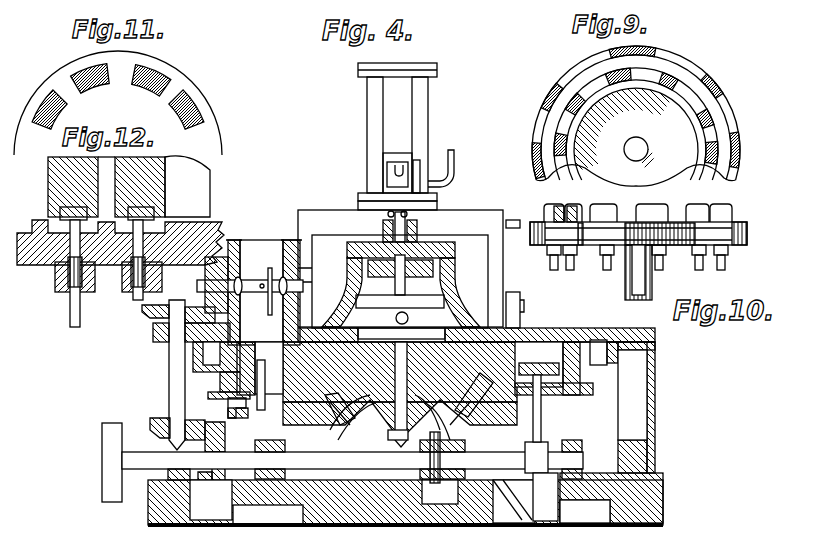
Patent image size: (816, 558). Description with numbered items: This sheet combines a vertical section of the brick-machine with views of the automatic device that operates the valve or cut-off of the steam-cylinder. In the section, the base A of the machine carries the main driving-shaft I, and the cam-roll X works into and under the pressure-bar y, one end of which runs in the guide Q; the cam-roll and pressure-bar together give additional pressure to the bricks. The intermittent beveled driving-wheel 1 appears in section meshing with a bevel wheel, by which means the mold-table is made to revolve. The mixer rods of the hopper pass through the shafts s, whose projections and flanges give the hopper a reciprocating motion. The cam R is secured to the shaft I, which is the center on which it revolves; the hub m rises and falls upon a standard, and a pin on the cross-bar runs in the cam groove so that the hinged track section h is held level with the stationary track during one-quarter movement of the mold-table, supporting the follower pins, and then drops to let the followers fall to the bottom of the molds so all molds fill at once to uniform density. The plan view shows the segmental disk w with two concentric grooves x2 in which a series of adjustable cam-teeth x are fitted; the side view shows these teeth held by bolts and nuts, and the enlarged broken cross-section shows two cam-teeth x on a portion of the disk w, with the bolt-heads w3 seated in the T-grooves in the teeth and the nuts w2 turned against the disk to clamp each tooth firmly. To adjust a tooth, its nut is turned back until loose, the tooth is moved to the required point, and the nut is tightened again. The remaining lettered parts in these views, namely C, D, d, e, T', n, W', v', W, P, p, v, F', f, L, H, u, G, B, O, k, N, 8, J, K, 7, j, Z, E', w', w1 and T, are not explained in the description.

In FIG. 4, the standard column C is at (406, 136).
In FIG. 4, the head frame D is at (400, 269).
In FIG. 4, the guide posts d is at (398, 229).
In FIG. 4, the adjusting screw e is at (401, 224).
In FIG. 4, the bell-shaped die holder T' is at (401, 284).
In FIG. 4, the plunger n is at (400, 275).
In FIG. 4, the upper die plate W' is at (400, 302).
In FIG. 4, the roller v' is at (408, 318).
In FIG. 4, the lower die plate W is at (401, 334).
In FIG. 4, the side plate P is at (476, 299).
In FIG. 4, the plate flanges p is at (305, 297).
In FIG. 4, the stop block v is at (515, 310).
In FIG. 4, the feed housing F' is at (264, 292).
In FIG. 4, the feed shaft f is at (250, 289).
In FIG. 4, the shaft s is at (238, 285).
In FIG. 4, the lever L is at (163, 375).
In FIG. 4, the bracket H is at (217, 353).
In FIG. 4, the slot u is at (405, 352).
In FIG. 4, the hub m is at (199, 419).
In FIG. 4, the hinged track section h is at (237, 413).
In FIG. 4, the cam R is at (218, 465).
In FIG. 4, the base A is at (405, 503).
In FIG. 4, the intermittent beveled driving-wheel 1 is at (512, 499).
In FIG. 4, the hand wheel G is at (102, 462).
In FIG. 4, the main driving-shaft I is at (352, 460).
In FIG. 4, the bed B is at (442, 391).
In FIG. 4, the opening O is at (409, 376).
In FIG. 4, the guides k is at (415, 368).
In FIG. 4, the ejector rod N is at (401, 394).
In FIG. 4, the ejector head 8 is at (398, 434).
In FIG. 4, the toggle links J is at (404, 408).
In FIG. 4, the cam arms K is at (398, 420).
In FIG. 4, the gear 7 is at (309, 457).
In FIG. 4, the bearing j is at (433, 459).
In FIG. 12, the cam-roll X is at (129, 186).
In FIG. 4, the cam-roll X is at (536, 457).
In FIG. 4, the guide Q is at (545, 497).
In FIG. 4, the bearing block Z is at (578, 457).
In FIG. 4, the pressure-bar y is at (547, 408).
In FIG. 4, the side housing E' is at (611, 432).
In FIG. 4, the plate w' is at (513, 226).
In FIG. 11, the cam-tooth x is at (118, 97).
In FIG. 9, the cam-tooth x is at (636, 112).
In FIG. 10, the cam-tooth x is at (638, 207).
In FIG. 9, the concentric groove x2 is at (639, 178).
In FIG. 9, the spindle T is at (639, 152).
In FIG. 10, the spindle T is at (638, 280).
In FIG. 12, the segmental disk w is at (120, 242).
In FIG. 10, the segmental disk w is at (637, 233).
In FIG. 10, the plate body w1 is at (636, 234).
In FIG. 12, the nut w2 is at (118, 277).
In FIG. 10, the nut w2 is at (639, 257).
In FIG. 12, the bolt-head w3 is at (107, 213).